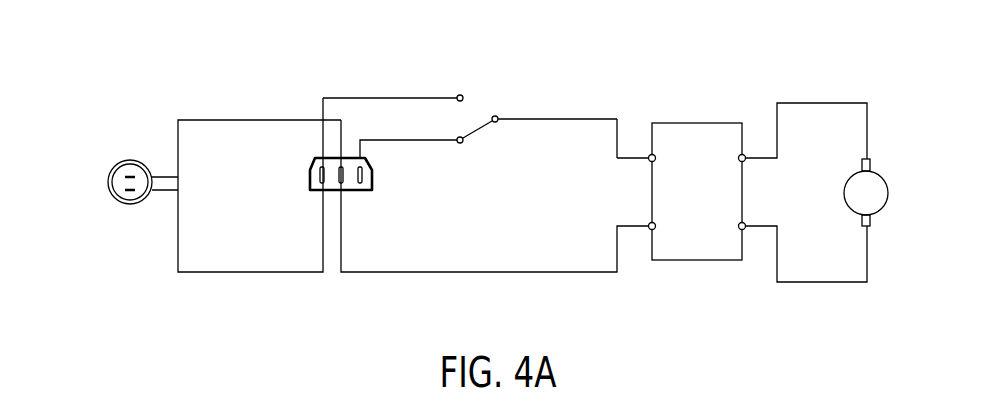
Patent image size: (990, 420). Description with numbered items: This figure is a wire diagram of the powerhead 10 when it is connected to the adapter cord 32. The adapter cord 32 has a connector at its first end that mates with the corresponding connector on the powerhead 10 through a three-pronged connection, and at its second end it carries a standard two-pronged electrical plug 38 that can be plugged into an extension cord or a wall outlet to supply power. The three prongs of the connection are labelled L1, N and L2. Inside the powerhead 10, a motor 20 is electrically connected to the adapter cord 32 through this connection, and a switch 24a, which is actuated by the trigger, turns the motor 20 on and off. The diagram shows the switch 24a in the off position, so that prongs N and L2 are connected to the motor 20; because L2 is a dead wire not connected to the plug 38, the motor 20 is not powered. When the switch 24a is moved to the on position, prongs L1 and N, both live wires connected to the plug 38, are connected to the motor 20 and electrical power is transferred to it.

The powerhead 10 is at (650, 226).
The motor 20 is at (903, 189).
The switch 24a is at (510, 100).
The adapter cord 32 is at (330, 282).
The electrical plug 38 is at (118, 218).
The prong N is at (340, 166).
The prong L1 is at (320, 174).
The prong L2 is at (367, 176).